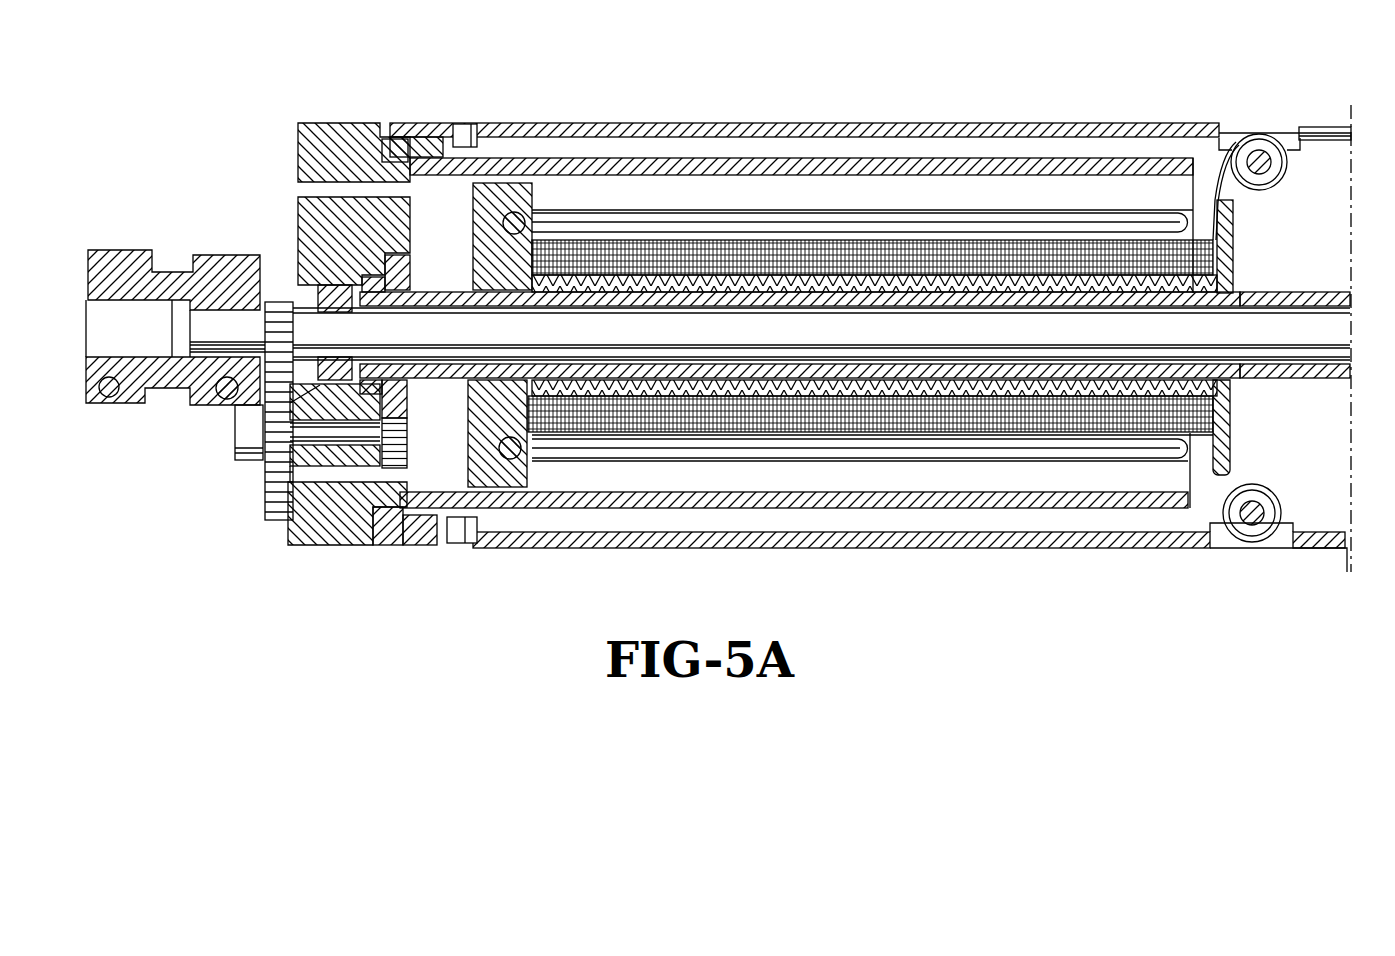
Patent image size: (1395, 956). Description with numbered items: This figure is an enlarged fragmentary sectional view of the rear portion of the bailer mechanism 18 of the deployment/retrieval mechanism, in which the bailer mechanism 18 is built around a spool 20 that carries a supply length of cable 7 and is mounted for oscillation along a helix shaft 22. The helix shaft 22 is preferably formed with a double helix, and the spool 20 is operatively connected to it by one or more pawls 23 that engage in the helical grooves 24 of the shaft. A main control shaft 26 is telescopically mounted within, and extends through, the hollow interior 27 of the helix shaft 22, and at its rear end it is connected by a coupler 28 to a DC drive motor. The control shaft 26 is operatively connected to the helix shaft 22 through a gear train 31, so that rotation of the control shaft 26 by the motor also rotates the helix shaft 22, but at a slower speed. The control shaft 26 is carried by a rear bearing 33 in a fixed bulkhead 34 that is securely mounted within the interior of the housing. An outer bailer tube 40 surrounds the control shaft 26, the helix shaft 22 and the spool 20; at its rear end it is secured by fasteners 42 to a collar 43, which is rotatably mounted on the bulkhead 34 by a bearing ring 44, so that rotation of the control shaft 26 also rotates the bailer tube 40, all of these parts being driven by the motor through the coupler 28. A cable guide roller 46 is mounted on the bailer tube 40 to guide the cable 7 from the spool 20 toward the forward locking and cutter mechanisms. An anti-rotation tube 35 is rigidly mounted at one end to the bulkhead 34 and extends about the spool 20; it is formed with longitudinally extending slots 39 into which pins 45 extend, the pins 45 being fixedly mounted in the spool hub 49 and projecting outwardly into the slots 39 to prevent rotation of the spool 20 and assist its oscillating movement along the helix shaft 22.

The cable 7 is at (1219, 182).
The bailer mechanism 18 is at (655, 100).
The spool 20 is at (1240, 452).
The helix shaft 22 is at (1310, 382).
The pawl 23 is at (493, 375).
The helical grooves 24 is at (548, 360).
The main control shaft 26 is at (1308, 332).
The hollow interior 27 is at (1262, 318).
The coupler 28 is at (130, 404).
The gear train 31 is at (418, 272).
The rear bearing 33 is at (337, 282).
The bulkhead 34 is at (343, 128).
The anti-rotation tube 35 is at (668, 508).
The slots 39 is at (700, 216).
The bailer tube 40 is at (985, 542).
The fasteners 42 is at (463, 128).
The collar 43 is at (412, 128).
The bearing ring 44 is at (398, 528).
The pins 45 is at (515, 214).
The cable guide roller 46 is at (1259, 140).
The spool hub 49 is at (513, 484).